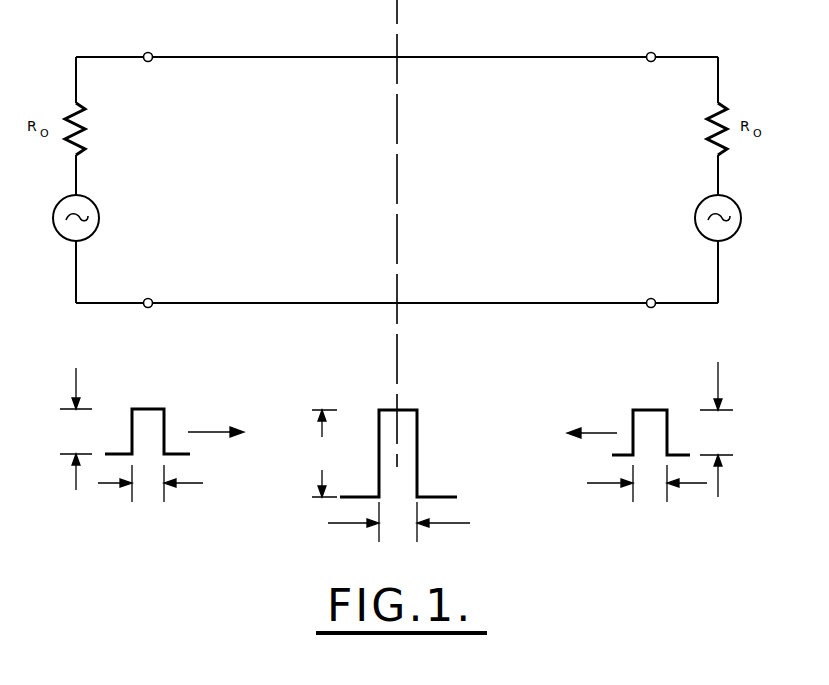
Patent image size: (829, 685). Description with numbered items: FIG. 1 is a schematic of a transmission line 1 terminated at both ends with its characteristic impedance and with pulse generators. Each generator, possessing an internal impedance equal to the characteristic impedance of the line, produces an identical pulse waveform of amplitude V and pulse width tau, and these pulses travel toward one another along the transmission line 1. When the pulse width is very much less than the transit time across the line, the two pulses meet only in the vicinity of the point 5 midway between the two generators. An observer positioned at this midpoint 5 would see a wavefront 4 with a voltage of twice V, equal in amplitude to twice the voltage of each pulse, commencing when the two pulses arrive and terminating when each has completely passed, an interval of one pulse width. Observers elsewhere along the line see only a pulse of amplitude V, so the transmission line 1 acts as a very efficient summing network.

The transmission line 1 is at (231, 57).
The wavefront 4 is at (414, 410).
The midpoint 5 is at (398, 56).